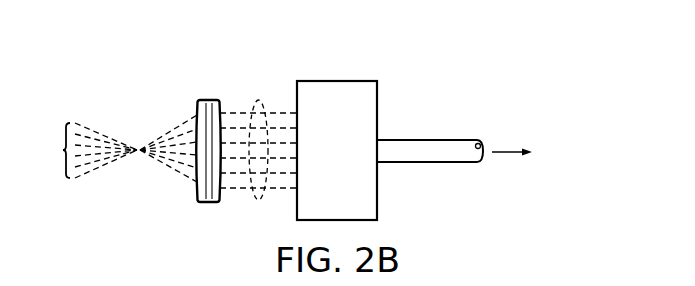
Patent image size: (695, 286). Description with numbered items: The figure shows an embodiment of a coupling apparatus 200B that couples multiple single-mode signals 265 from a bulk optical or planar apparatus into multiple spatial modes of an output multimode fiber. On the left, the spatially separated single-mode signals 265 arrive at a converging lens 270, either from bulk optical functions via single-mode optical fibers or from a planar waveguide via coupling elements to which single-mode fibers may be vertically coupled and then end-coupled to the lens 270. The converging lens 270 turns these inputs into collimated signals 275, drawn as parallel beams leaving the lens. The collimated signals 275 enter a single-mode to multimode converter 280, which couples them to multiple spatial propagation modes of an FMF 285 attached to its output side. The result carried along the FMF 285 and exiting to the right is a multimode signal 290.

The coupling apparatus 200B is at (458, 33).
The single-mode signals 265 is at (107, 148).
The converging lens 270 is at (208, 99).
The collimated signals 275 is at (258, 201).
The single-mode to multimode converter 280 is at (358, 164).
The FMF 285 is at (427, 164).
The multimode signal 290 is at (512, 146).